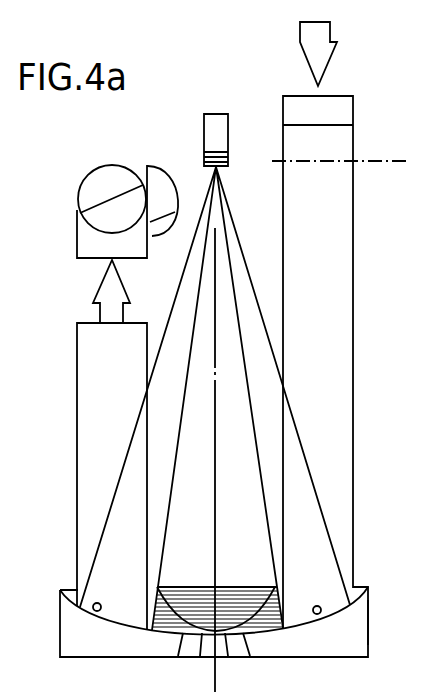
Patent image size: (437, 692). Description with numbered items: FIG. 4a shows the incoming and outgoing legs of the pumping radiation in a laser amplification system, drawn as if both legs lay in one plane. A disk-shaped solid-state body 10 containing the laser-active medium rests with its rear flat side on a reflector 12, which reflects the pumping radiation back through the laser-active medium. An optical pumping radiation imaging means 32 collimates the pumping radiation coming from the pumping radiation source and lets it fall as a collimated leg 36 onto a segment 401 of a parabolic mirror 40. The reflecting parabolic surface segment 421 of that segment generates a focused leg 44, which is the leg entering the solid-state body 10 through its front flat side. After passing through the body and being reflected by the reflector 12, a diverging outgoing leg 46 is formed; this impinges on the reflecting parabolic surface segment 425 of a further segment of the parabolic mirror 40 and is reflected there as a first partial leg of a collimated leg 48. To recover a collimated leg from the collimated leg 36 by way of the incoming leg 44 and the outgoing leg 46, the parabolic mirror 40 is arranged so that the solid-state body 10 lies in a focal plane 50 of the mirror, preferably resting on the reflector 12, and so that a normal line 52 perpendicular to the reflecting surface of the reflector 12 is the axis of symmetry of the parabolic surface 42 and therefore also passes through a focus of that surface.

The solid-state body 10 is at (204, 172).
The reflector 12 is at (203, 140).
The optical pumping radiation imaging means 32 is at (345, 113).
The collimated leg 36 is at (343, 293).
The focal plane 50 is at (380, 164).
The collimated leg 48 is at (96, 366).
The outgoing leg 46 is at (173, 406).
The focused leg 44 is at (252, 385).
The parabolic surface 42 is at (262, 592).
The parabolic mirror 40 is at (252, 655).
The normal line 52 is at (213, 672).
The reflecting parabolic surface segment 425 is at (94, 611).
The reflecting parabolic surface segment 421 is at (315, 614).
The segment of parabolic mirror 401 is at (363, 637).